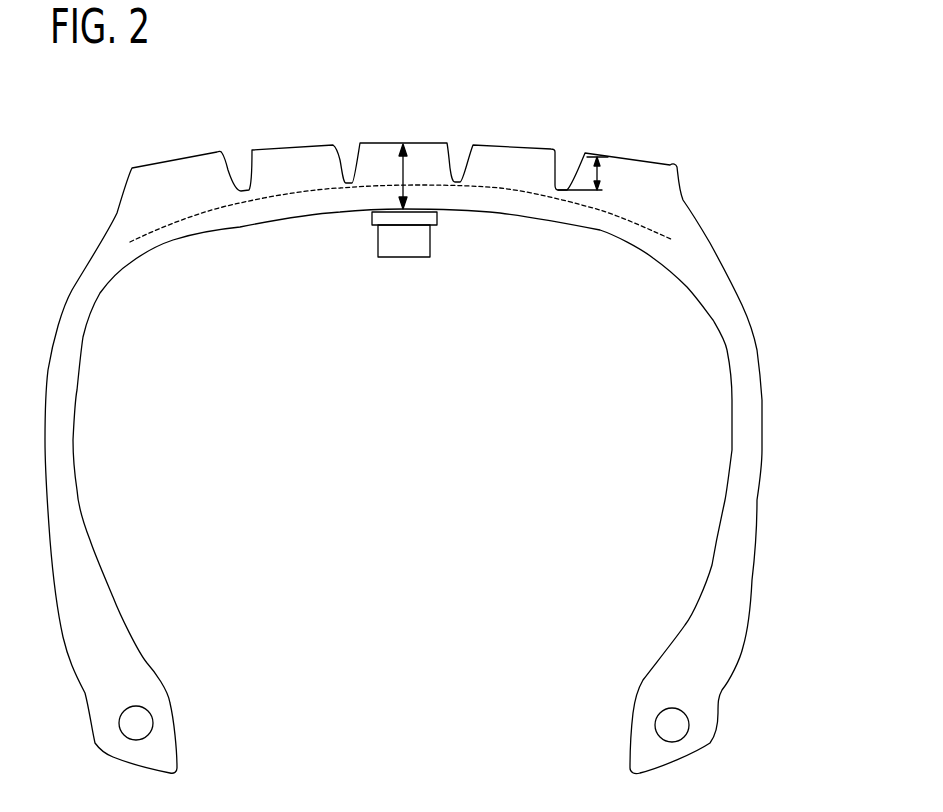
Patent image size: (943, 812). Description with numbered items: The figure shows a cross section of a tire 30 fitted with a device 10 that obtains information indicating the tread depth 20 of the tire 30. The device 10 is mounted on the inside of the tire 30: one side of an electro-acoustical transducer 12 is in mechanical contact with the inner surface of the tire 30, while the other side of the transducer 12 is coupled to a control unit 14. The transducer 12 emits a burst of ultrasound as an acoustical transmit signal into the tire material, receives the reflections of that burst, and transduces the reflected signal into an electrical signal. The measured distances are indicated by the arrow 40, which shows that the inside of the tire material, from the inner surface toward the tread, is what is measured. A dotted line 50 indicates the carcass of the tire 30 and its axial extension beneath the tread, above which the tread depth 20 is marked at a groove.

The device 10 is at (401, 303).
The electro-acoustical transducer 12 is at (372, 214).
The control unit 14 is at (430, 238).
The tread depth 20 is at (597, 172).
The tire 30 is at (753, 443).
The arrow 40 is at (405, 172).
The dotted line 50 is at (207, 218).